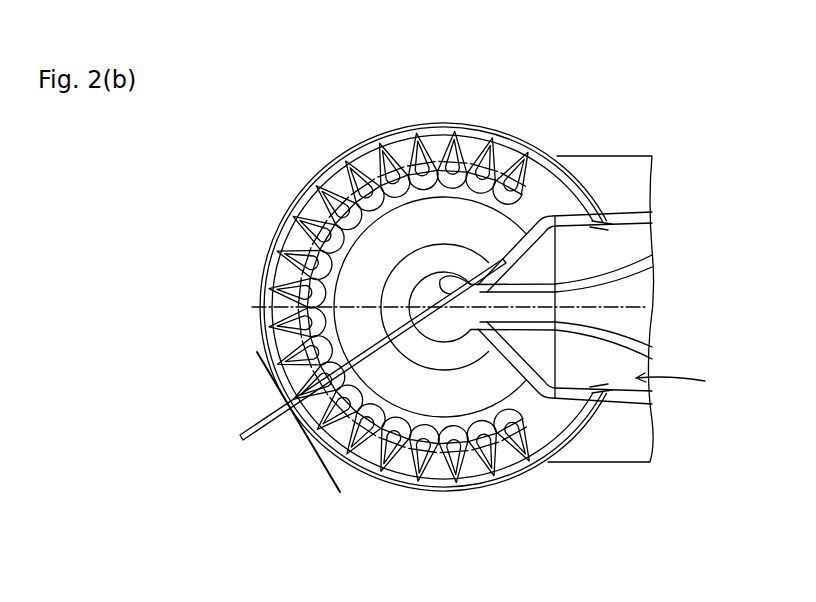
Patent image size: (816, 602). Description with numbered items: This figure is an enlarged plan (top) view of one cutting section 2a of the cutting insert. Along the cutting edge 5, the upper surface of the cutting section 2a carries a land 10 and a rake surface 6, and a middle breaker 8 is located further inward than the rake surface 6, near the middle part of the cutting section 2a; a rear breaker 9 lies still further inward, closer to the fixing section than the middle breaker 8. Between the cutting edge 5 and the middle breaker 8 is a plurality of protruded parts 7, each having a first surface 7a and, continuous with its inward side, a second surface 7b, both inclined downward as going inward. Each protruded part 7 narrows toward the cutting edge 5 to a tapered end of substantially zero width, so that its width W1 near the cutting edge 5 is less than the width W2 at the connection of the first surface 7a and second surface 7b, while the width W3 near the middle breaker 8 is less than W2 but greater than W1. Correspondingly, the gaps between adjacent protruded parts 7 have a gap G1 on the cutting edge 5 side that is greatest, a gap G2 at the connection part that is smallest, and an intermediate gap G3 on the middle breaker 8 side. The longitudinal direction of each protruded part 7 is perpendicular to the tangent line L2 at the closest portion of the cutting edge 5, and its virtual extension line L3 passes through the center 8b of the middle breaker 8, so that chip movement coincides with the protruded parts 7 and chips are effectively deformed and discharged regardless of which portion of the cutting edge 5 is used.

The cutting section 2a is at (650, 60).
The cutting edge 5 is at (408, 497).
The rake surface 6 is at (485, 491).
The protruded parts 7 is at (547, 472).
The first surface 7a is at (273, 358).
The second surface 7b is at (328, 353).
The middle breaker 8 is at (475, 243).
The center of the middle breaker 8b is at (470, 318).
The rear breaker 9 is at (685, 381).
The land 10 is at (470, 511).
The width of the protruded part closer to the cutting edge W1 is at (316, 172).
The width of the protruded part in the connection part of the first surface and the W2 is at (340, 178).
The width of the protruded part closer to the middle breaker W3 is at (370, 267).
The gap between adjacent protruded parts on the side of the cutting edge G1 is at (266, 244).
The gap between adjacent protruded parts in the connection part of the first surface G2 is at (254, 306).
The gap between adjacent protruded parts on the side of the middle breaker G3 is at (435, 275).
The tangent line L2 is at (313, 455).
The virtual extension line L3 is at (250, 432).